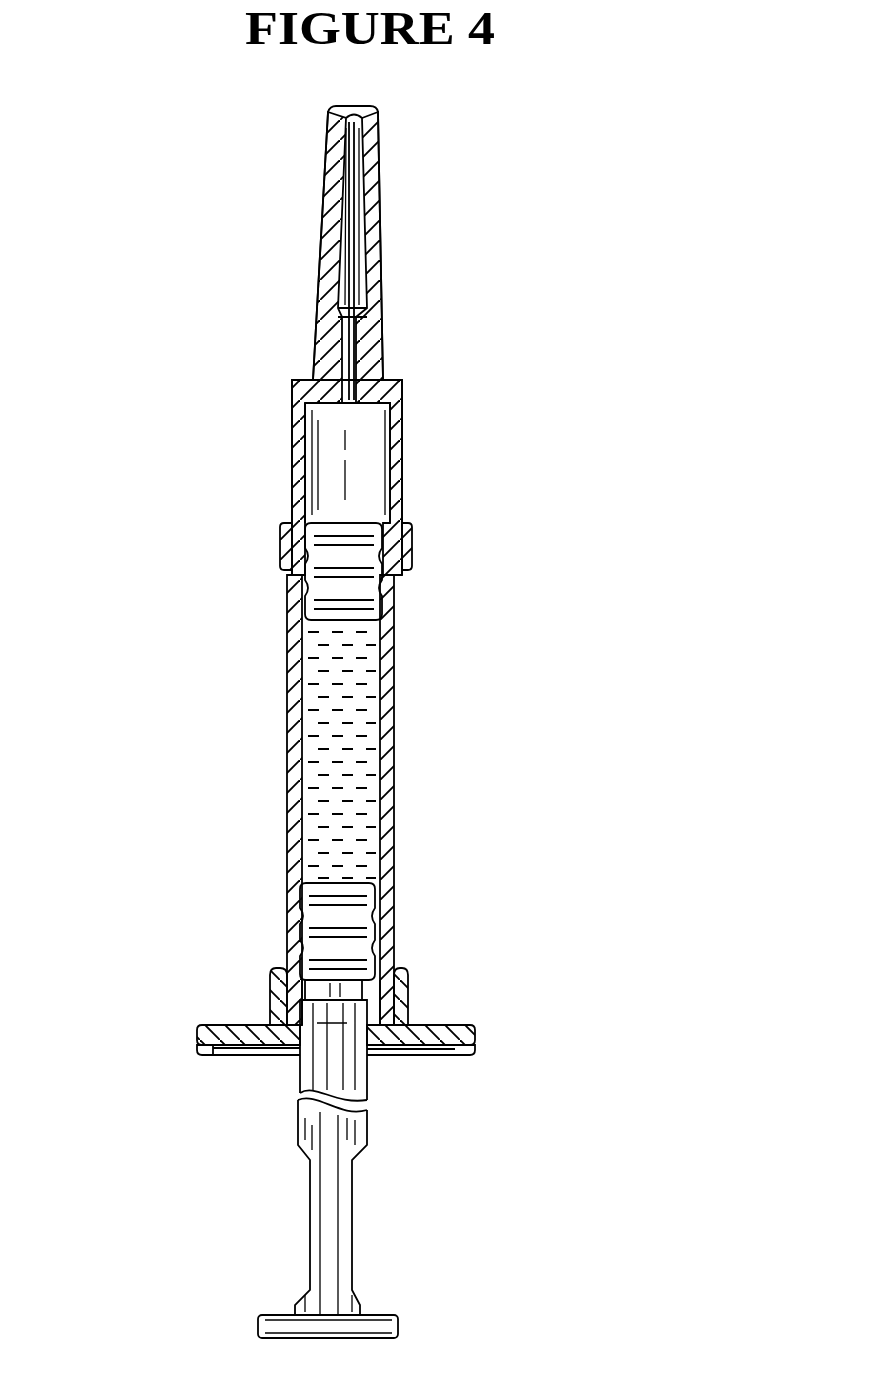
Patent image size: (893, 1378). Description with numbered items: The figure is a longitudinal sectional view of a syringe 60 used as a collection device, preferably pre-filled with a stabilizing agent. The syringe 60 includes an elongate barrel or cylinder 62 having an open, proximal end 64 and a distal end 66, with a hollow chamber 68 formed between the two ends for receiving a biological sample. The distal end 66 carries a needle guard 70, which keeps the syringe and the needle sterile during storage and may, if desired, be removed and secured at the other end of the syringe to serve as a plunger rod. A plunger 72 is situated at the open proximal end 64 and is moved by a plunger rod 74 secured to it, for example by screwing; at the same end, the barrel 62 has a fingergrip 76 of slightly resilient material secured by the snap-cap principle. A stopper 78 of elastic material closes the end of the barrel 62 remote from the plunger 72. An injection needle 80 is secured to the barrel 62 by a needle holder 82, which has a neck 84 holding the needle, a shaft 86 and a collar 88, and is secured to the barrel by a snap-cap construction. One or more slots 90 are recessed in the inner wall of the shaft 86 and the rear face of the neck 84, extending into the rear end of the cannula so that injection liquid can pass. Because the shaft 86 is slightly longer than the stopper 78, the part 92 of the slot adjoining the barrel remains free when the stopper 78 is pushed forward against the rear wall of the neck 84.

The syringe 60 is at (165, 812).
The barrel 62 is at (385, 768).
The open proximal end 64 is at (400, 970).
The distal end 66 is at (302, 325).
The hollow chamber 68 is at (370, 843).
The needle guard 70 is at (380, 157).
The plunger 72 is at (323, 942).
The plunger rod 74 is at (302, 1075).
The fingergrip 76 is at (403, 1033).
The stopper 78 is at (297, 583).
The injection needle 80 is at (352, 247).
The needle holder 82 is at (424, 417).
The neck 84 is at (378, 372).
The shaft 86 is at (397, 477).
The collar 88 is at (410, 556).
The slots 90 is at (290, 427).
The part of the slot adjoining the barrel 92 is at (287, 510).